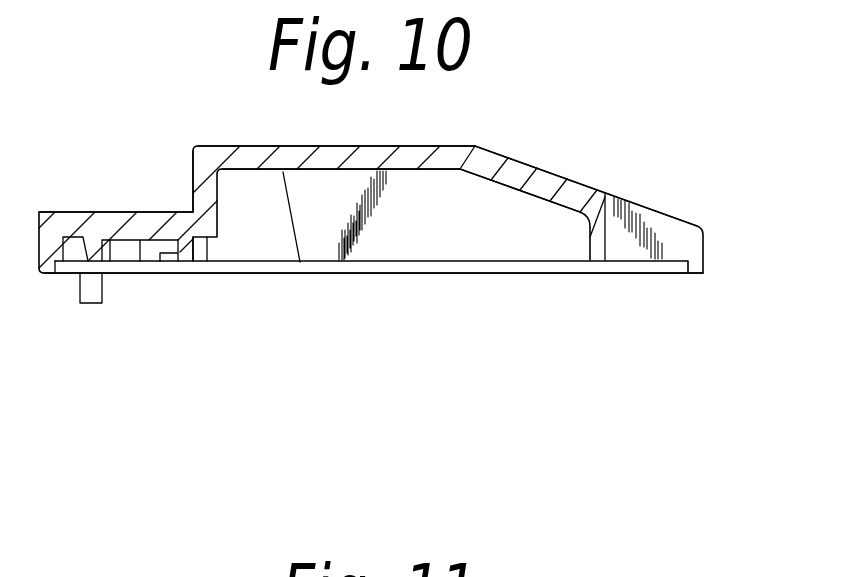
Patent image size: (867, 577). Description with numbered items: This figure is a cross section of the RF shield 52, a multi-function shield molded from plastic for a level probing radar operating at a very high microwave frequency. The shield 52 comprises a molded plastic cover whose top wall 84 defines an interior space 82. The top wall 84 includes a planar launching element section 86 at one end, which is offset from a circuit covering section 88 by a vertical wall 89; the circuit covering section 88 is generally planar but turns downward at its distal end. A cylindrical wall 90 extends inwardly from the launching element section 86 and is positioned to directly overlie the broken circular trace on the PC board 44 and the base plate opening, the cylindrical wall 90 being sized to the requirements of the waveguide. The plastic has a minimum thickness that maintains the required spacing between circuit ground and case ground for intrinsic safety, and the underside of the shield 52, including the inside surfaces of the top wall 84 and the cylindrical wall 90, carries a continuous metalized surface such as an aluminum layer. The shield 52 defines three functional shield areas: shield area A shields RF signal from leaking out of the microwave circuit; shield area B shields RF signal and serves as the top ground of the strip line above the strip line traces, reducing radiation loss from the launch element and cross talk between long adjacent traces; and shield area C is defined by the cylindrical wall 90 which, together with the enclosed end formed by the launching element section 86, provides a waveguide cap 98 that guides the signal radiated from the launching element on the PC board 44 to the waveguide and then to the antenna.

The interior space 82 is at (421, 224).
The top wall 84 is at (437, 145).
The circuit covering section 88 is at (250, 162).
The vertical wall 89 is at (193, 187).
The RF shield 52 is at (534, 157).
The launching element section 86 is at (105, 228).
The PC board 44 is at (405, 265).
The waveguide cap 98 is at (122, 262).
The cylindrical wall 90 is at (185, 258).
The shield area A is at (301, 262).
The shield area B is at (207, 262).
The shield area C is at (138, 243).